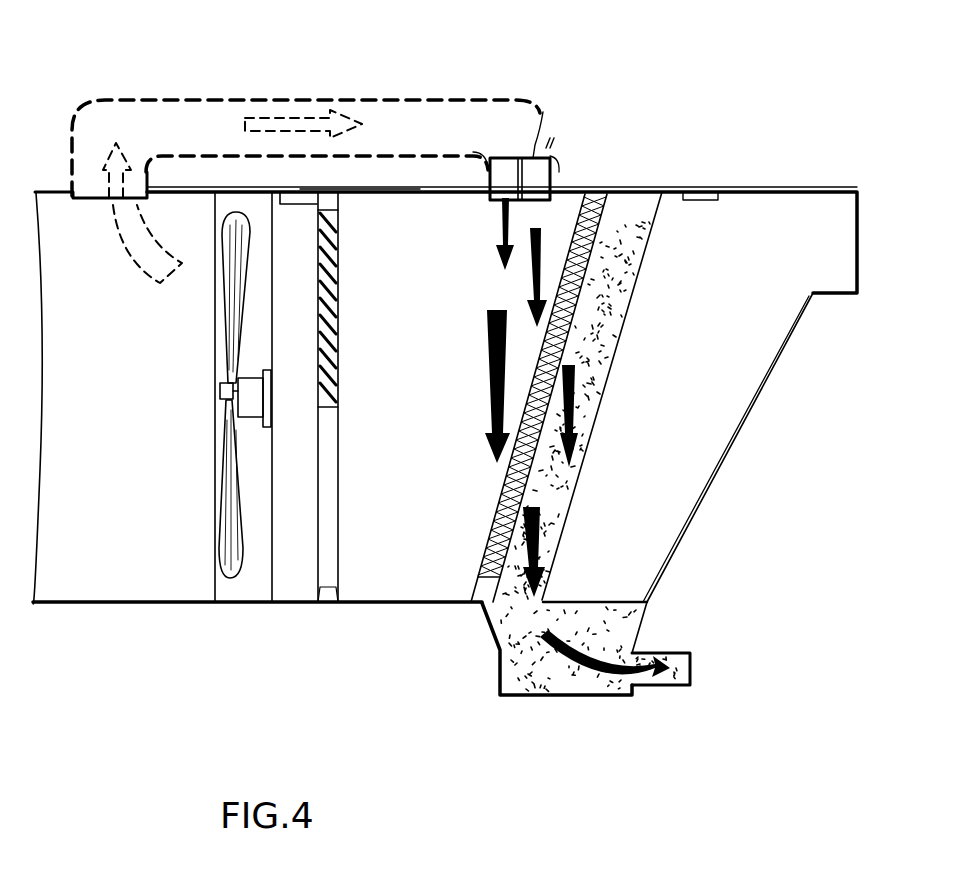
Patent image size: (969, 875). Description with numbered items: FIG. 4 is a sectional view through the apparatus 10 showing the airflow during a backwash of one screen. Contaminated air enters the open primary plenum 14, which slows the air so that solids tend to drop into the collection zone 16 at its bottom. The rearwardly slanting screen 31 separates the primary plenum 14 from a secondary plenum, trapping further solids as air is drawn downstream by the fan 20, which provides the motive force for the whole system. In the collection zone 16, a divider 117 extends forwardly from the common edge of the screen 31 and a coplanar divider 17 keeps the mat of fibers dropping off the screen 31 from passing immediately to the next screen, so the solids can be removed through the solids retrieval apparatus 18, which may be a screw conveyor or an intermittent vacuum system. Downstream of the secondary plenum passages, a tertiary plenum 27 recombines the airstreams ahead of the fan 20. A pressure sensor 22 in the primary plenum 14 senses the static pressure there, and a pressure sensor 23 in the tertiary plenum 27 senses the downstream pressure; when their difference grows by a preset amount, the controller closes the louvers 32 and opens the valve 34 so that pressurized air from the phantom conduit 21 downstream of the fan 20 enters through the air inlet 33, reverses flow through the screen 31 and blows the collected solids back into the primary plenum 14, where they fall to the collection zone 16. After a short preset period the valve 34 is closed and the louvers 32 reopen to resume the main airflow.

The apparatus 10 is at (563, 101).
The primary plenum 14 is at (808, 190).
The collection zone 16 is at (567, 683).
The divider 17 is at (541, 686).
The solids retrieval apparatus 18 is at (665, 688).
The fan 20 is at (227, 578).
The conduit 21 is at (177, 95).
The pressure sensor 22 is at (698, 200).
The pressure sensor 23 is at (297, 205).
The tertiary plenum 27 is at (341, 198).
The screen 31 is at (605, 215).
The louvers 32 is at (338, 334).
The air inlet 33 is at (550, 174).
The valve 34 is at (543, 126).
The divider 117 is at (545, 488).